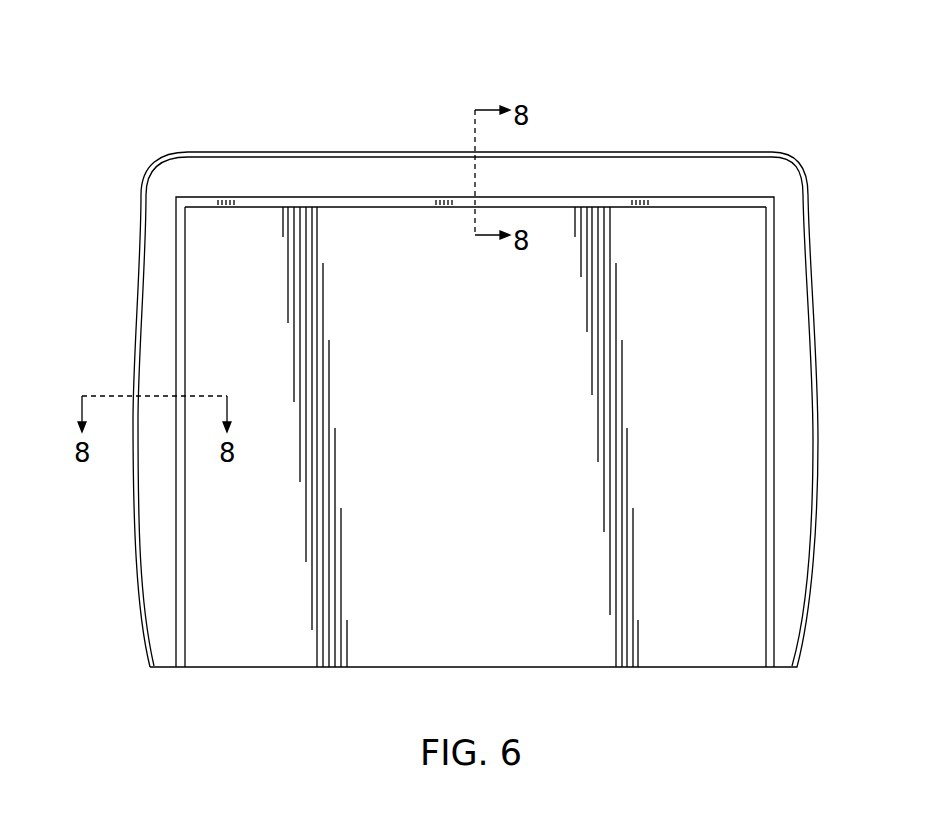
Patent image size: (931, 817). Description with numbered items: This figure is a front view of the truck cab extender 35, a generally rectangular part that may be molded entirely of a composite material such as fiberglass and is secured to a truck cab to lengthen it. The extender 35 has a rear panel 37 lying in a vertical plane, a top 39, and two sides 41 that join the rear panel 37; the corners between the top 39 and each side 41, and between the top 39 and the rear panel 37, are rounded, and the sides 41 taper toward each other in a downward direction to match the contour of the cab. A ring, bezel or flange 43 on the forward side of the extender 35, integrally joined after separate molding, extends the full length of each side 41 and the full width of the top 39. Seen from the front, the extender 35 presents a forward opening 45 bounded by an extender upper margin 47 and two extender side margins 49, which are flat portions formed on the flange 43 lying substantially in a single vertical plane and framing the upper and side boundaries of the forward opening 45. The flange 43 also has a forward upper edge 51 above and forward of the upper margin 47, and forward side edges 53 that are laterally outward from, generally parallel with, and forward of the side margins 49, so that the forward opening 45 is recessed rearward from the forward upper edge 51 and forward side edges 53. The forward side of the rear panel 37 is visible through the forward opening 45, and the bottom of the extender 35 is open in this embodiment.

The extender 35 is at (705, 149).
The rear panel 37 is at (566, 578).
The top 39 is at (580, 152).
The sides 41 is at (137, 278).
The flange 43 is at (140, 225).
The forward opening 45 is at (766, 462).
The extender upper margin 47 is at (370, 206).
The extender side margins 49 is at (185, 516).
The forward upper edge 51 is at (290, 152).
The forward side edges 53 is at (132, 480).